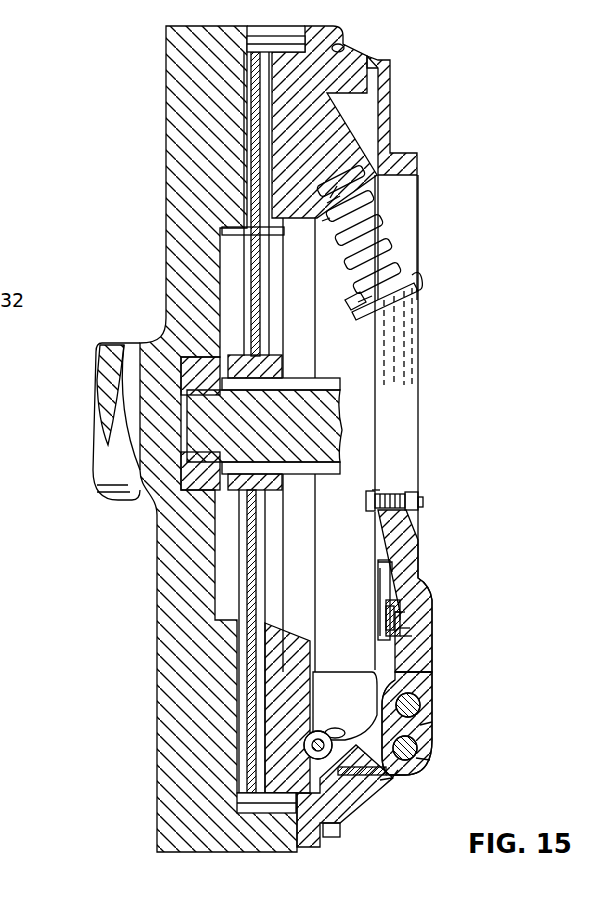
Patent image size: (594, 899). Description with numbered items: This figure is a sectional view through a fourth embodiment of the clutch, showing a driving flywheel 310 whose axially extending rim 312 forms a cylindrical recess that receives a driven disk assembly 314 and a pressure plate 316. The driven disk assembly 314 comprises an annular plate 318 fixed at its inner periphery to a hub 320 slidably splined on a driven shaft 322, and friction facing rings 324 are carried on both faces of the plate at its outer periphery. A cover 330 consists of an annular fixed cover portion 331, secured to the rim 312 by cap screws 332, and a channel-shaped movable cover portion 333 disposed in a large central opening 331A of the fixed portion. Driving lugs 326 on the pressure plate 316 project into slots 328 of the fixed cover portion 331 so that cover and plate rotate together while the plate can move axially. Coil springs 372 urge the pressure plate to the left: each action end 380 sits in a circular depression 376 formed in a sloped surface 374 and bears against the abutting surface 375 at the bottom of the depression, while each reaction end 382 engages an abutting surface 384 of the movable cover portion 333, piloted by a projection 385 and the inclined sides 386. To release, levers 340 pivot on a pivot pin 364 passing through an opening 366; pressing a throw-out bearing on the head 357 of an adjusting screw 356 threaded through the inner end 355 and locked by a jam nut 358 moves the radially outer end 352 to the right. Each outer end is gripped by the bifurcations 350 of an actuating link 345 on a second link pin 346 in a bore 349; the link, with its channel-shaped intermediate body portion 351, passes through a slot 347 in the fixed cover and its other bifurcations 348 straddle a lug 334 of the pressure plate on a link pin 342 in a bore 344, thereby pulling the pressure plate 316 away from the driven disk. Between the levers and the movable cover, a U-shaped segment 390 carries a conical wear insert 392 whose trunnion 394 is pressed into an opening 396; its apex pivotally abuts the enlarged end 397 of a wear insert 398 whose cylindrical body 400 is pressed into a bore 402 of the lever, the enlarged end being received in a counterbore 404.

The flywheel 310 is at (178, 174).
The rim 312 is at (305, 852).
The driven disk assembly 314 is at (232, 312).
The pressure plate 316 is at (300, 660).
The annular plate 318 is at (250, 305).
The hub 320 is at (222, 358).
The driven shaft 322 is at (264, 426).
The friction facing rings 324 is at (228, 240).
The driving lugs 326 is at (372, 62).
The slots 328 is at (343, 50).
The cover 330 is at (425, 248).
The fixed cover portion 331 is at (390, 136).
The central opening 331A is at (412, 182).
The cap screws 332 is at (341, 832).
The movable cover portion 333 is at (378, 600).
The lugs 334 is at (318, 712).
The levers 340 is at (432, 578).
The link pin 342 is at (325, 735).
The bore 344 is at (326, 745).
The actuating link 345 is at (400, 780).
The second link pin 346 is at (430, 758).
The slots 347 is at (385, 782).
The bifurcations 348 is at (322, 718).
The bore 349 is at (418, 742).
The bifurcations 350 is at (432, 722).
The intermediate body portion 351 is at (398, 777).
The radially outer end 352 is at (395, 772).
The inner end 355 is at (388, 492).
The adjusting screw 356 is at (410, 490).
The head 357 is at (424, 502).
The jam nut 358 is at (372, 492).
The pivot pin 364 is at (421, 703).
The opening 366 is at (425, 690).
The coil springs 372 is at (388, 222).
The surfaces 374 is at (372, 185).
The abutting surface 375 is at (355, 213).
The circular depressions 376 is at (294, 445).
The action end 380 is at (380, 205).
The reaction end 382 is at (414, 292).
The abutting surfaces 384 is at (348, 303).
The projection 385 is at (356, 300).
The sides 386 is at (424, 278).
The U-shaped segments 390 is at (378, 580).
The wear insert 392 is at (386, 575).
The trunnion 394 is at (384, 628).
The opening 396 is at (386, 618).
The enlarged end 397 is at (410, 612).
The wear insert 398 is at (412, 614).
The cylindrical body 400 is at (412, 626).
The bore 402 is at (414, 634).
The counterbore 404 is at (410, 650).